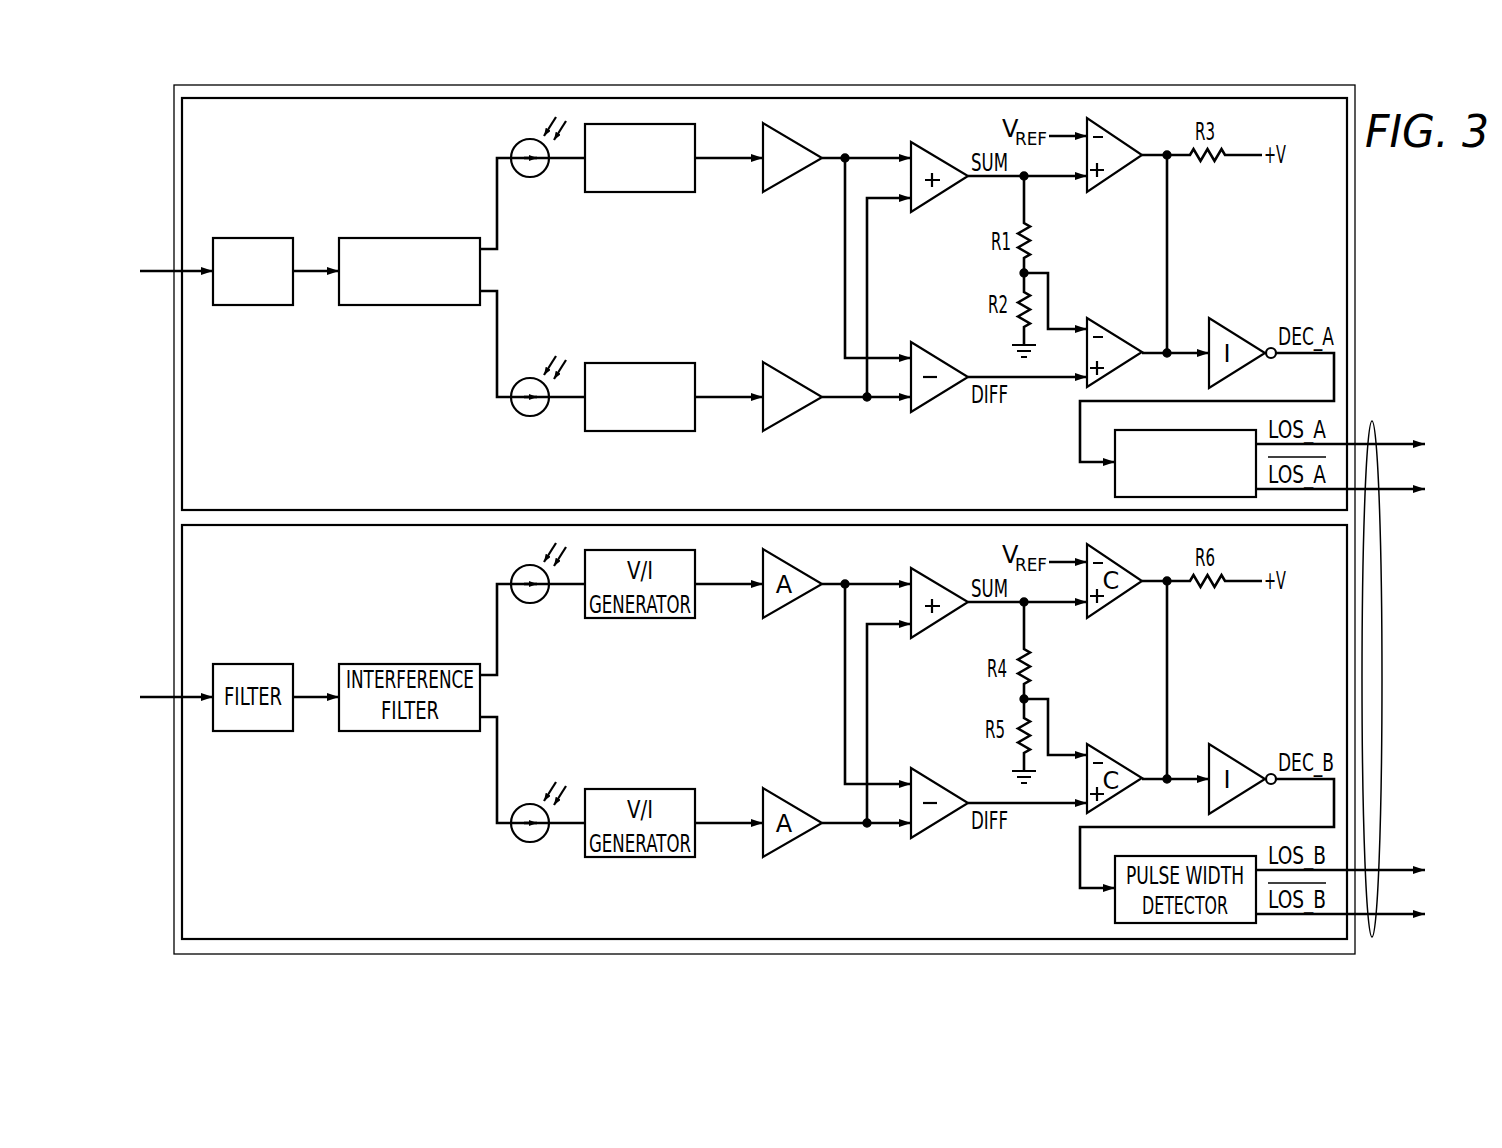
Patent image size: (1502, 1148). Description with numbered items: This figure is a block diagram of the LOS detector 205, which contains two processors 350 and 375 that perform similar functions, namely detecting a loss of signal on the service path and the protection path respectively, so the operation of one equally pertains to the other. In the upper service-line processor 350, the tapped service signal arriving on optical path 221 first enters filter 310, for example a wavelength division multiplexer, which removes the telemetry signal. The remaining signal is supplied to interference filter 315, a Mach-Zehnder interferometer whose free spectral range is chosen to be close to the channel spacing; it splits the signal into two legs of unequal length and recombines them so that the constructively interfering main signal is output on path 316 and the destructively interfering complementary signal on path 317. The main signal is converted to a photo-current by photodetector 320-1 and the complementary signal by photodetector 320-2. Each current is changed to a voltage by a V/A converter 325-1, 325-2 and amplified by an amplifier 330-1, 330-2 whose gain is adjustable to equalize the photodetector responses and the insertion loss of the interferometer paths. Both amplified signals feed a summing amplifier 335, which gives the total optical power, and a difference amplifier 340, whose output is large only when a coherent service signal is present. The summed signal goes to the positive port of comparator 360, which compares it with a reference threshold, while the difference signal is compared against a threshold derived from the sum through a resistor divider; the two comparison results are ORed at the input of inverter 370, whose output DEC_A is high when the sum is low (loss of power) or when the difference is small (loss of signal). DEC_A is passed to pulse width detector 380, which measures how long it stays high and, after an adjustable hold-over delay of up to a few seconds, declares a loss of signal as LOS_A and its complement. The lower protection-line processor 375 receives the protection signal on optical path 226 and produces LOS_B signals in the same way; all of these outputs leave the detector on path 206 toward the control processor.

The LOS detector 205 is at (1355, 247).
The path 206 is at (1374, 422).
The optical path 221 is at (155, 271).
The optical path 226 is at (155, 697).
The filter 310 is at (250, 305).
The interference filter 315 is at (410, 305).
The path 316 is at (497, 222).
The path 317 is at (497, 315).
The photodetector 320-1 is at (516, 146).
The photodetector 320-2 is at (517, 412).
The V/A converter 325-1 is at (640, 192).
The V/A converter 325-2 is at (642, 363).
The amplifier 330-1 is at (788, 180).
The amplifier 330-2 is at (794, 380).
The summing amplifier 335 is at (935, 197).
The difference amplifier 340 is at (938, 358).
The processor 350 is at (182, 457).
The comparator 360 is at (1112, 176).
The inverter 370 is at (1116, 335).
The processor 375 is at (182, 582).
The pulse width detector 380 is at (1115, 482).